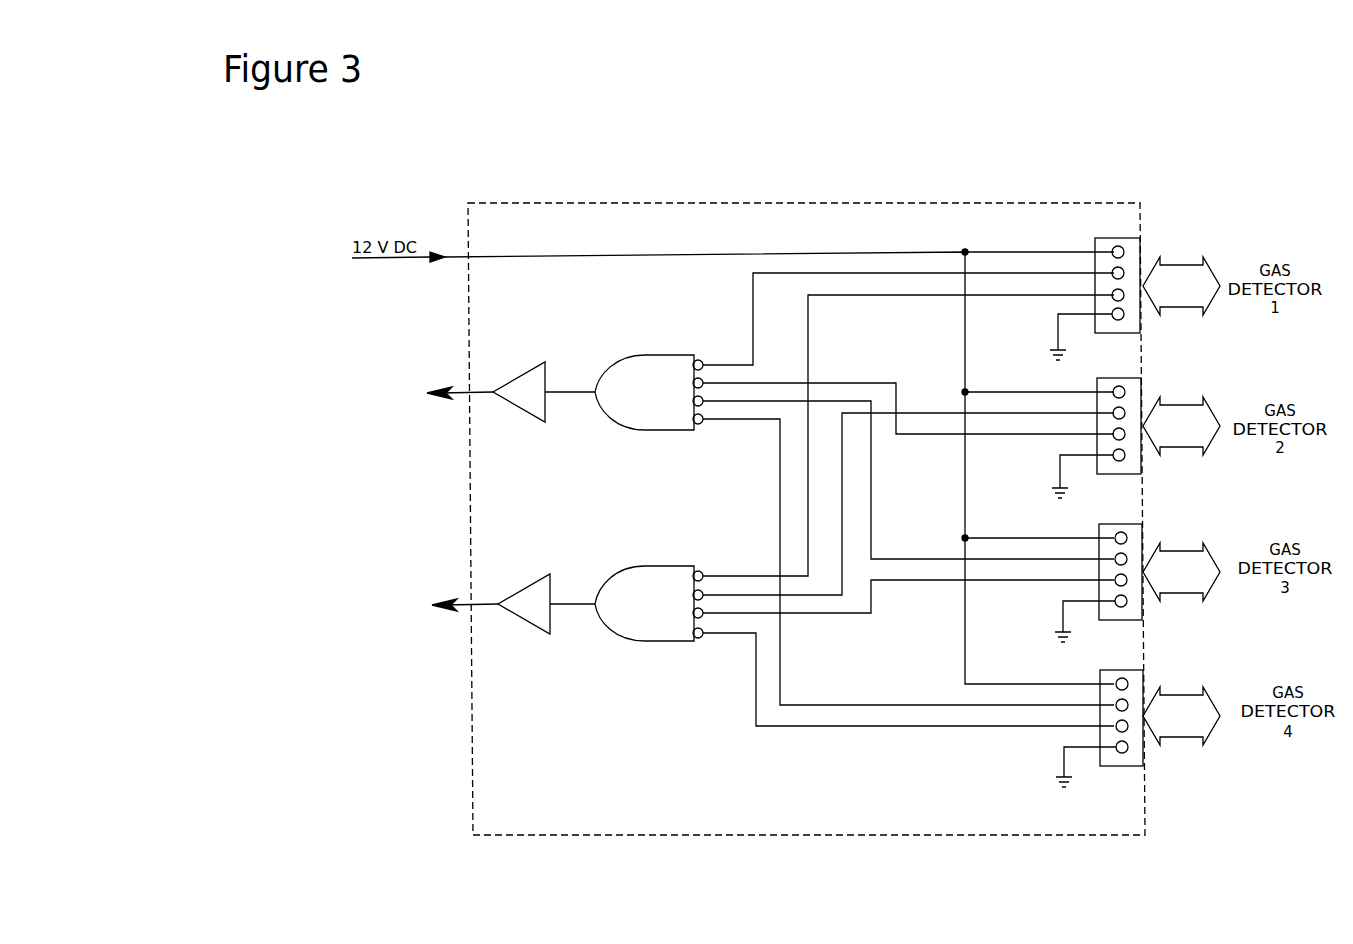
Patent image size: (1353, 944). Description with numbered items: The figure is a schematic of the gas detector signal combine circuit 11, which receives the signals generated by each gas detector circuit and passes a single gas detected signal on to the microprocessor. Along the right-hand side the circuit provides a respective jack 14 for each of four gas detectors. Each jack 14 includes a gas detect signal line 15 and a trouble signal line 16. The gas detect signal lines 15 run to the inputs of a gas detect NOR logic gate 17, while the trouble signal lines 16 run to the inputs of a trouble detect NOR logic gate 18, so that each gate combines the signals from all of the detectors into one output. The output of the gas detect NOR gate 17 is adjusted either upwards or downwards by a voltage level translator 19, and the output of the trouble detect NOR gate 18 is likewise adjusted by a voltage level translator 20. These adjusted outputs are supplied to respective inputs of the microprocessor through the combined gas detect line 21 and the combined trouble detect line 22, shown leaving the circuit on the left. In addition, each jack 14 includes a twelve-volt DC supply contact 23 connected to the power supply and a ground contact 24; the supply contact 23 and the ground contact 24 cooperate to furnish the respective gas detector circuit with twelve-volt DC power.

The gas detector signal combine circuit 11 is at (806, 501).
The jack 14 is at (1122, 238).
The gas detect signal line 15 is at (920, 273).
The trouble signal line 16 is at (920, 295).
The gas detect NOR logic gate 17 is at (660, 355).
The trouble detect NOR logic gate 18 is at (665, 566).
The voltage level translator 19 is at (530, 370).
The voltage level translator 20 is at (535, 582).
The combined gas detect line 21 is at (457, 391).
The combined trouble detect line 22 is at (462, 604).
The 12 VDC supply contact 23 is at (1126, 249).
The ground contact 24 is at (1126, 317).